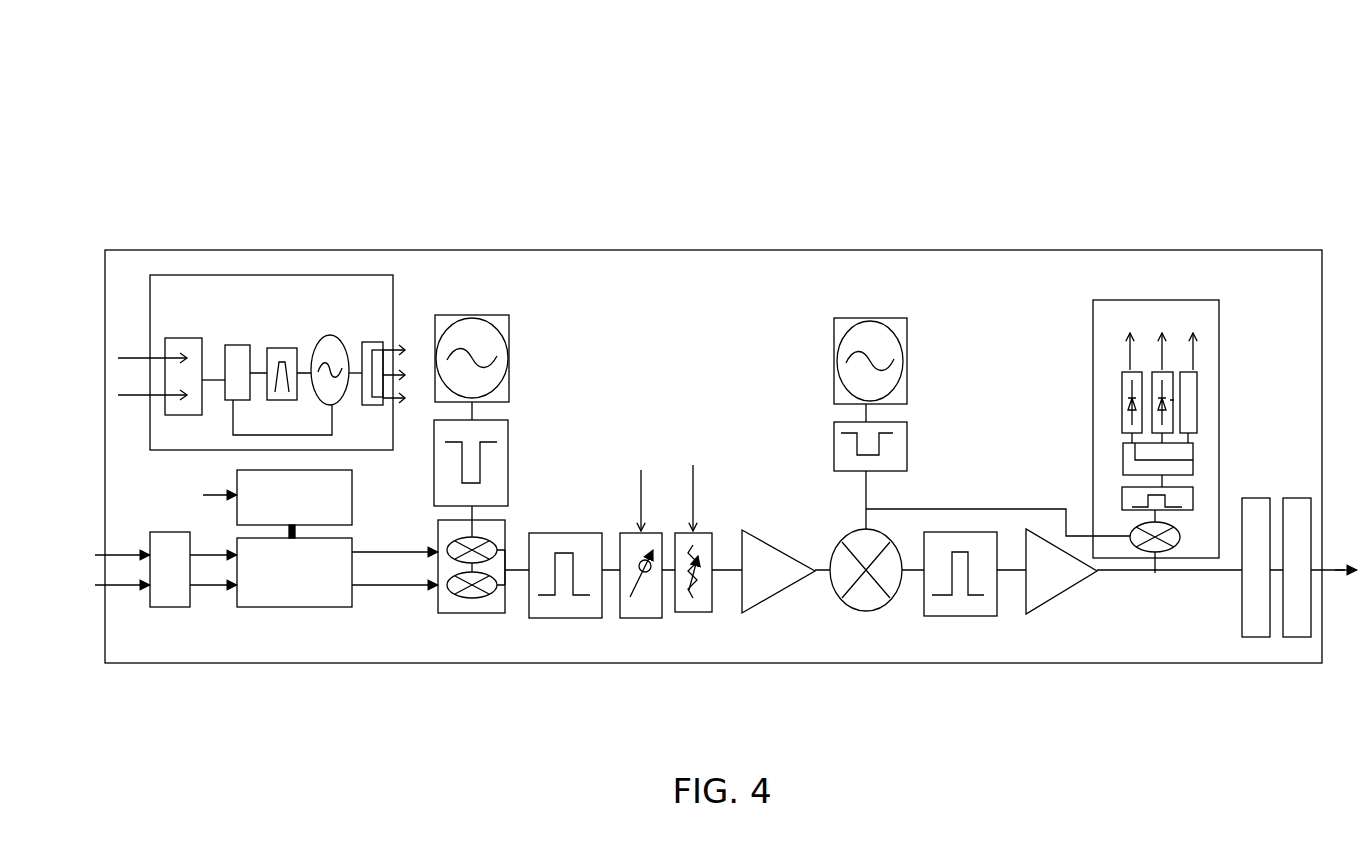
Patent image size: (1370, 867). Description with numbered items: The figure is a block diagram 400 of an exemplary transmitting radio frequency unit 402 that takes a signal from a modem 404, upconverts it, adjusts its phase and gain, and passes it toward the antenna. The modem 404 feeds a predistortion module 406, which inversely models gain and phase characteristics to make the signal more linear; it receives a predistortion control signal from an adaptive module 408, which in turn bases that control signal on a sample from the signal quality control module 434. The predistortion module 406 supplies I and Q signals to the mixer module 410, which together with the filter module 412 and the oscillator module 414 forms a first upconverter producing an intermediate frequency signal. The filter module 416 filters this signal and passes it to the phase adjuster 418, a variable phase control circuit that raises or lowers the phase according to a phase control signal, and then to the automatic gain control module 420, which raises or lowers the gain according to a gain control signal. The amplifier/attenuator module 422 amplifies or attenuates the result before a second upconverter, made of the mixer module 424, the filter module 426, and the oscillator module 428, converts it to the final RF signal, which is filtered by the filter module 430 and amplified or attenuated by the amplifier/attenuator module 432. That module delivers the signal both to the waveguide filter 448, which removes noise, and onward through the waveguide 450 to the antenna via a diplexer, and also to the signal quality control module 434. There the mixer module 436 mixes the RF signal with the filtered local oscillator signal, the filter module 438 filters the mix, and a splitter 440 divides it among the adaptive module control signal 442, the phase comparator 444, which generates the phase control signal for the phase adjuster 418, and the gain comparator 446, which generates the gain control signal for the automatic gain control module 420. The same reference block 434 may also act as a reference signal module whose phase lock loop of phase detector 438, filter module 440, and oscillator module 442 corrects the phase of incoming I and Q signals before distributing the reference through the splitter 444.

The block diagram 400 is at (130, 120).
The transmitting radio frequency unit 402 is at (102, 290).
The modem 404 is at (172, 607).
The predistortion module 406 is at (298, 607).
The adaptive module 408 is at (352, 510).
The mixer module 410 is at (478, 613).
The filter module 412 is at (508, 492).
The oscillator module 414 is at (505, 385).
The filter module 416 is at (565, 618).
The phase adjuster 418 is at (643, 618).
The automatic gain control module 420 is at (695, 612).
The amplifier/attenuator module 422 is at (760, 605).
The mixer module 424 is at (868, 616).
The filter module 426 is at (907, 443).
The oscillator module 428 is at (905, 385).
The filter module 430 is at (962, 616).
The amplifier/attenuator module 432 is at (1030, 614).
The signal quality control module 434 is at (393, 300).
The mixer module 436 is at (188, 338).
The filter module 438 is at (243, 355).
The splitter 440 is at (290, 353).
The adaptive module control signal 442 is at (348, 347).
The phase comparator 444 is at (383, 403).
The gain comparator 446 is at (1193, 310).
The waveguide filter 448 is at (1253, 637).
The waveguide 450 is at (1305, 637).